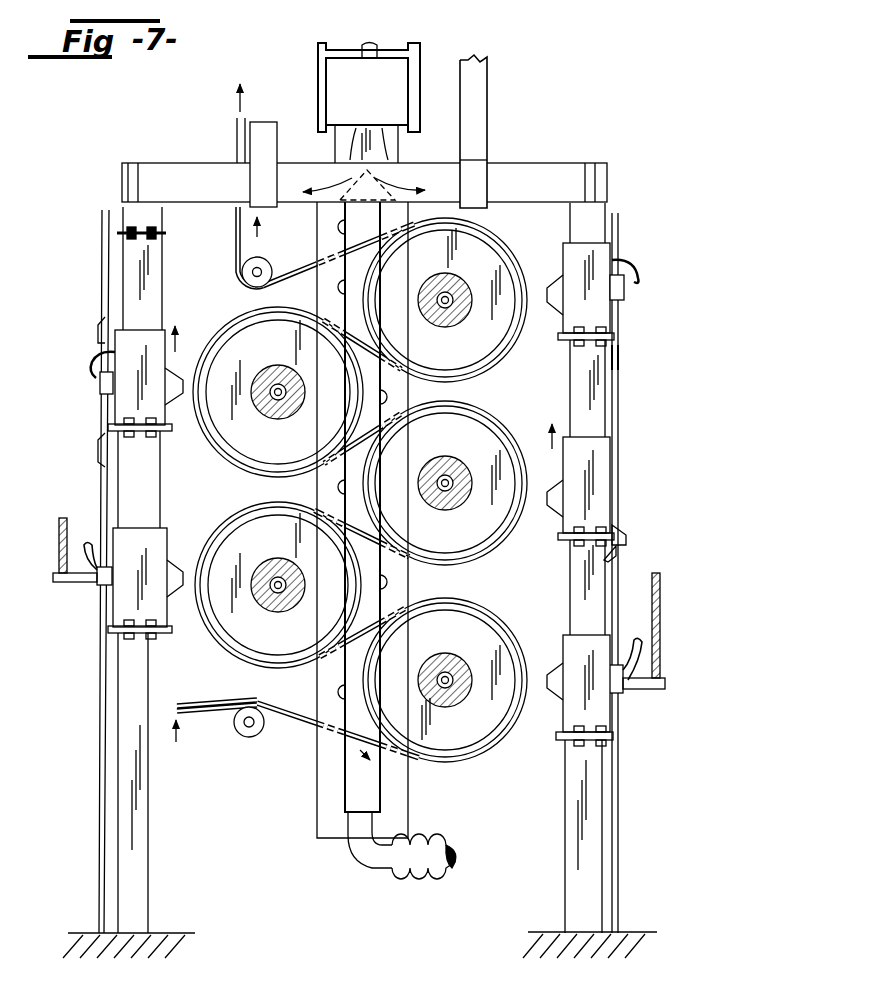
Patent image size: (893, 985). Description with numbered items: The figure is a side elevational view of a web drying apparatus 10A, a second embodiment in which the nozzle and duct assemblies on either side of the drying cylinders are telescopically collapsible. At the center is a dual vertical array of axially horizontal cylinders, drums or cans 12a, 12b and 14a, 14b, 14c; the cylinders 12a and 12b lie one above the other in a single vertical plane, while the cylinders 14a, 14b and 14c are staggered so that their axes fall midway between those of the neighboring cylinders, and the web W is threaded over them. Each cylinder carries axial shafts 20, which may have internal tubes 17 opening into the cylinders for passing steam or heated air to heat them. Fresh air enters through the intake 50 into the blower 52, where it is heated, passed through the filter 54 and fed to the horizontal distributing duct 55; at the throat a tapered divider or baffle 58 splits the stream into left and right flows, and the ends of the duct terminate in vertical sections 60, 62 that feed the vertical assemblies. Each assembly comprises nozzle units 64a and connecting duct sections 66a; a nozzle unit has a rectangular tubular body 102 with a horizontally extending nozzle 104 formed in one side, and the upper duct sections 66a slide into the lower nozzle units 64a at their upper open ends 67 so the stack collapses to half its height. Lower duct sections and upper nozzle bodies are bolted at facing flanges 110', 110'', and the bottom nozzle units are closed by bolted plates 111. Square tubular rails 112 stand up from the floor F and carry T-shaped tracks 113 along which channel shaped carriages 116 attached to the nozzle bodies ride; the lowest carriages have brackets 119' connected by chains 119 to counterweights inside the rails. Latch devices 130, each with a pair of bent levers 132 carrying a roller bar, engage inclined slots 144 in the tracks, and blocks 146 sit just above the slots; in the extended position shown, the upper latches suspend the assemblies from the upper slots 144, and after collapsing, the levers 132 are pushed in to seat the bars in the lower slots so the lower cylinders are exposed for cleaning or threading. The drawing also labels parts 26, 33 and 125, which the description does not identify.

The web drying apparatus 10A is at (357, 491).
The cylinder 12a is at (230, 332).
The cylinder 12b is at (264, 601).
The cylinder 14a is at (503, 352).
The cylinder 14b is at (503, 540).
The cylinder 14c is at (500, 742).
The internal tube 17 is at (296, 593).
The axial shaft 20 is at (272, 612).
The roller shell 26 is at (232, 648).
The air duct 33 is at (325, 785).
The fresh air intake 50 is at (348, 150).
The blower 52 is at (391, 78).
The filter 54 is at (400, 123).
The horizontal distributing duct 55 is at (522, 174).
The tapered divider 58 is at (385, 193).
The vertical section 60 is at (147, 215).
The vertical section 62 is at (590, 222).
The nozzle unit 64a is at (112, 405).
The connecting duct section 66a is at (150, 500).
The upper open end 67 is at (597, 440).
The rectangular tubular body 102 is at (596, 316).
The nozzle 104 is at (550, 290).
The flange 110' is at (644, 363).
The flange 110'' is at (619, 339).
The bolted plate 111 is at (587, 752).
The tubular rail 112 is at (140, 866).
The T-shaped track 113 is at (110, 829).
The channel shaped carriage 116 is at (106, 578).
The chain 119 is at (355, 598).
The bracket 119' is at (384, 650).
The exhaust pipe 125 is at (471, 100).
The latch device 130 is at (84, 374).
The bent lever 132 is at (95, 362).
The inclined slot 144 is at (606, 560).
The block 146 is at (625, 536).
The web W is at (233, 251).
The floor F is at (160, 933).